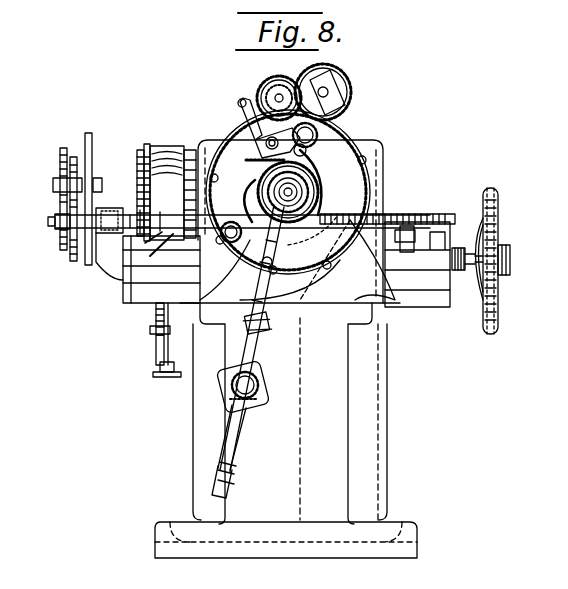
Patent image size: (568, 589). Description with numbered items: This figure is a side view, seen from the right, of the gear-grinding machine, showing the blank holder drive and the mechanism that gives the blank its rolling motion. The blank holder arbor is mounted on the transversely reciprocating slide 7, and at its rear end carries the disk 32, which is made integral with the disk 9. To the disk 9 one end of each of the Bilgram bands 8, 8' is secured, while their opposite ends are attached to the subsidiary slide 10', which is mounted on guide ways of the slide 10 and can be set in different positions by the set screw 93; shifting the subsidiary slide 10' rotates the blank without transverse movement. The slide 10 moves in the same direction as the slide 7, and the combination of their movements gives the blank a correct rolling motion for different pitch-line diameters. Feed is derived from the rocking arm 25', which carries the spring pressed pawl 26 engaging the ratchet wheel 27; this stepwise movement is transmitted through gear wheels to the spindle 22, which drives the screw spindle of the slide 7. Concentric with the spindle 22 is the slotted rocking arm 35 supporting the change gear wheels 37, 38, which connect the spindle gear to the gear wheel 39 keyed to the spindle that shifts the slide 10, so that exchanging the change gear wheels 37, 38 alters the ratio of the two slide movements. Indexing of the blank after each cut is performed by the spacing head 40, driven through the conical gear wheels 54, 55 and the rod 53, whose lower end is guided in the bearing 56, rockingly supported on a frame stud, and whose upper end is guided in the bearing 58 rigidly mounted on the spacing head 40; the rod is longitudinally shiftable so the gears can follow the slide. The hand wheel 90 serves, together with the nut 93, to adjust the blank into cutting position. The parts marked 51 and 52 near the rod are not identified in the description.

The transversely reciprocating slide 7 is at (392, 212).
The Bilgram band 8 is at (244, 219).
The Bilgram band 8' is at (324, 213).
The disk 9 is at (288, 192).
The slide 10 is at (256, 351).
The subsidiary slide 10' is at (375, 263).
The spindle 22 is at (100, 208).
The rocking arm 25' is at (151, 364).
The spring pressed pawl 26 is at (148, 332).
The ratchet wheel 27 is at (153, 320).
The disk 32 is at (368, 190).
The rocking arm 35 is at (92, 162).
The change gear wheel 37 is at (58, 160).
The change gear wheel 38 is at (74, 155).
The gear wheel 39 is at (55, 214).
The spacing head 40 is at (265, 84).
The worm gear 51 is at (260, 386).
The gear housing 52 is at (262, 404).
The rod 53 is at (265, 350).
The conical gear wheel 54 is at (312, 190).
The conical gear wheel 55 is at (318, 170).
The bearing 56 is at (246, 440).
The bearing 58 is at (283, 246).
The hand wheel 90 is at (500, 316).
The set screw 93 is at (447, 268).